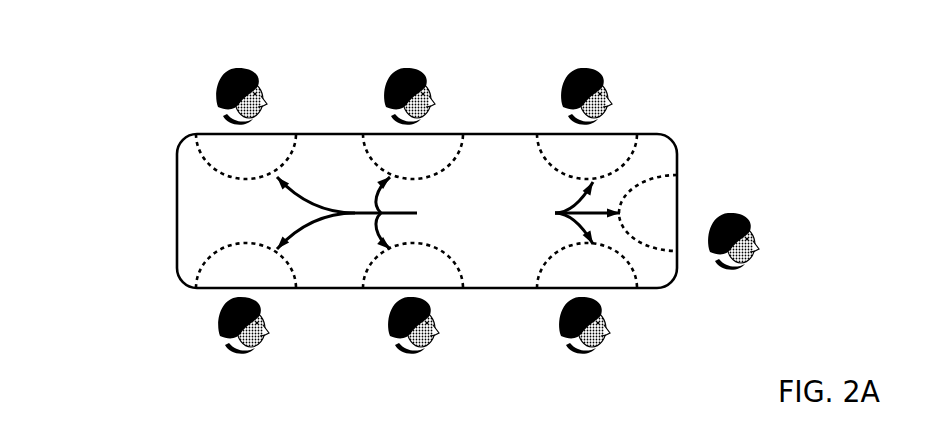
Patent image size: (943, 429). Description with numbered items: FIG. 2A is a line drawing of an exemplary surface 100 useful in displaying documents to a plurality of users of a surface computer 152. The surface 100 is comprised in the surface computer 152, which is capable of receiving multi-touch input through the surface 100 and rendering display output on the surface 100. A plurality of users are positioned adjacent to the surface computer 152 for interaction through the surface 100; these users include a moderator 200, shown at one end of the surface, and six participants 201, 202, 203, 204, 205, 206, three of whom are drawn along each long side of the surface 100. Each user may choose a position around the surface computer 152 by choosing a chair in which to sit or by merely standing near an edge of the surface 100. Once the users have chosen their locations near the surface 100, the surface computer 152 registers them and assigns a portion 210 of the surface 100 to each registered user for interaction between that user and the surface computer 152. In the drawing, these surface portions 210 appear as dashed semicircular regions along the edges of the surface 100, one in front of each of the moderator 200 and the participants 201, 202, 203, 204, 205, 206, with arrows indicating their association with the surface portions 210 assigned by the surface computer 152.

The surface 100 is at (672, 140).
The surface computer 152 is at (130, 226).
The moderator 200 is at (747, 206).
The participant 201 is at (307, 56).
The participant 202 is at (475, 56).
The participant 203 is at (650, 56).
The participant 204 is at (313, 386).
The participant 205 is at (483, 386).
The participant 206 is at (657, 386).
The portion 210 is at (545, 236).